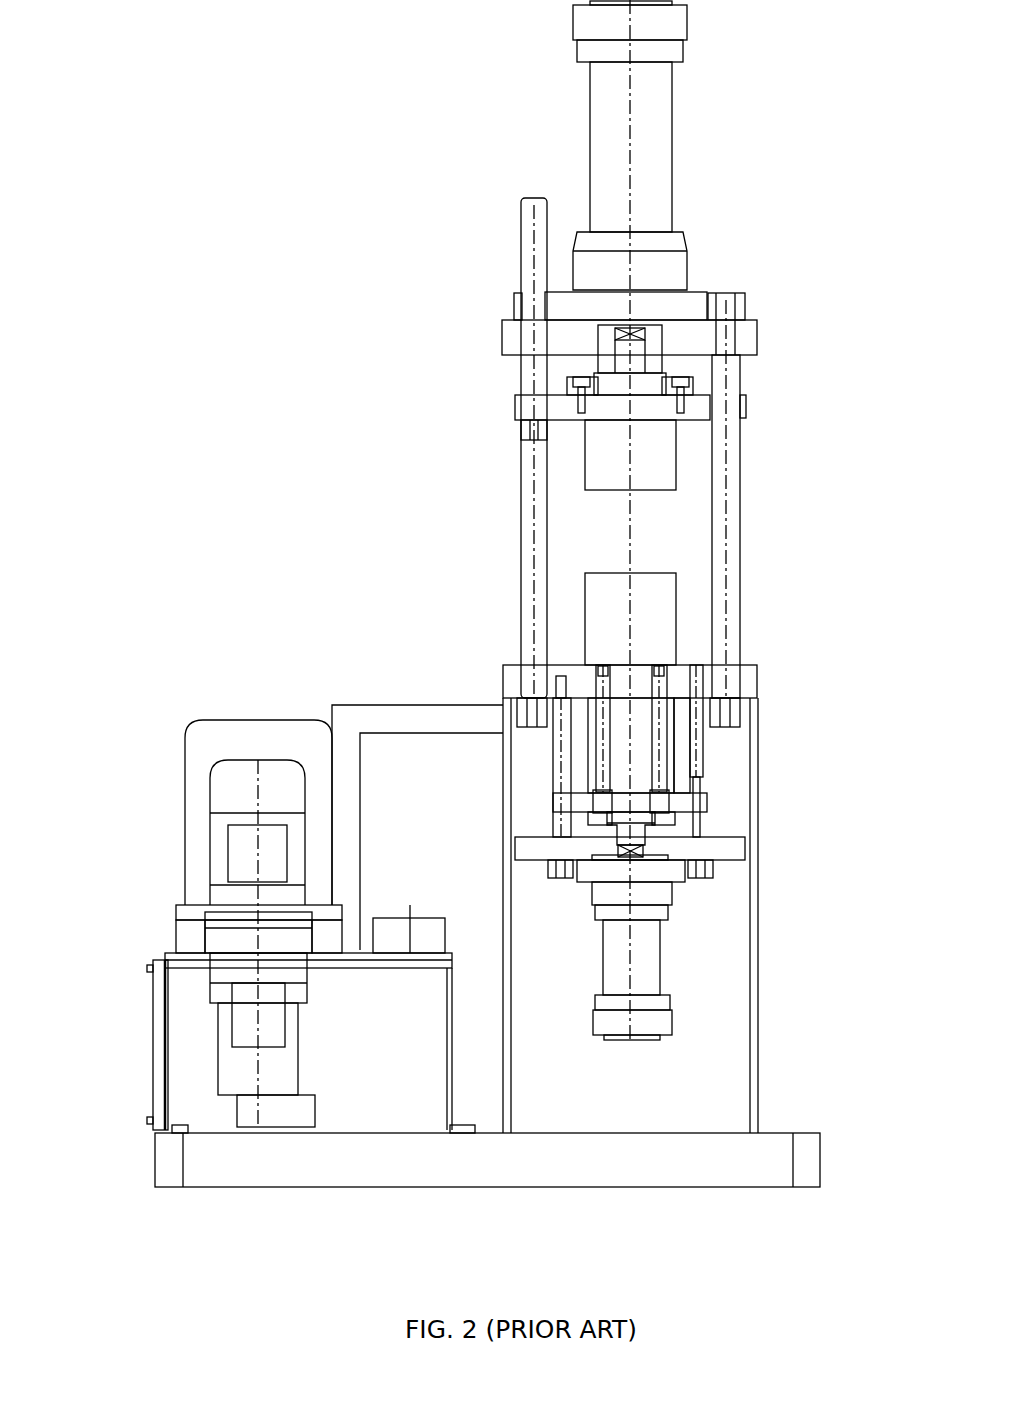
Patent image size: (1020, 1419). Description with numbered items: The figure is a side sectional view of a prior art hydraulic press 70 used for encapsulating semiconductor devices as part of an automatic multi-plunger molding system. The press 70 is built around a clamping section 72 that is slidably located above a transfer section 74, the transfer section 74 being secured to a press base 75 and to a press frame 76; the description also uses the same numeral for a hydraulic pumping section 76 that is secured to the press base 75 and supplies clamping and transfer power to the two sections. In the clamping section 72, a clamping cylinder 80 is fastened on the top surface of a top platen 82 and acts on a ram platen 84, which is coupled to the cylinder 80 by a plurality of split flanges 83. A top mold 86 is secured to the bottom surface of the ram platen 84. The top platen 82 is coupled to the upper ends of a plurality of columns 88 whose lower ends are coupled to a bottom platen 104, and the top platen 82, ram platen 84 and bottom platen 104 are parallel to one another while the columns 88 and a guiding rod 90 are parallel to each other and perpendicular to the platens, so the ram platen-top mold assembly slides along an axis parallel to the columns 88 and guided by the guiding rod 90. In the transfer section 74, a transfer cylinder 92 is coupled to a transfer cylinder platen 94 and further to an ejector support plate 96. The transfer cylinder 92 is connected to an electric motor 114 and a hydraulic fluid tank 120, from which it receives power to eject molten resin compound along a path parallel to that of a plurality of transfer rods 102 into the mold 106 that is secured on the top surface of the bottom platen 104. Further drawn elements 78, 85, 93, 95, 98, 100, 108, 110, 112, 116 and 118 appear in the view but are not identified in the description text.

The hydraulic press 70 is at (234, 198).
The clamping section 72 is at (687, 262).
The transfer section 74 is at (680, 895).
The press base 75 is at (777, 1133).
The press frame 76 is at (757, 713).
The motor housing 78 is at (185, 830).
The clamping cylinder 80 is at (672, 128).
The top platen 82 is at (757, 340).
The split flanges 83 is at (688, 388).
The ram platen 84 is at (693, 420).
The coupling 85 is at (537, 360).
The top mold 86 is at (625, 490).
The columns 88 is at (740, 520).
The guiding rod 90 is at (522, 268).
The transfer cylinder 92 is at (660, 940).
The lower coupling 93 is at (588, 822).
The transfer cylinder platen 94 is at (745, 845).
The bearing 95 is at (620, 848).
The ejector support plate 96 is at (707, 800).
The guide pins 98 is at (703, 770).
The bushing 100 is at (675, 752).
The transfer rod 102 is at (650, 708).
The bottom platen 104 is at (757, 680).
The top mold 106 is at (625, 573).
The motor 108 is at (210, 782).
The motor mount 110 is at (176, 912).
The pump housing 112 is at (218, 1055).
The electric motor 114 is at (287, 838).
The coupling block 116 is at (313, 928).
The pump shaft 118 is at (232, 1018).
The hydraulic fluid tank 120 is at (450, 1052).